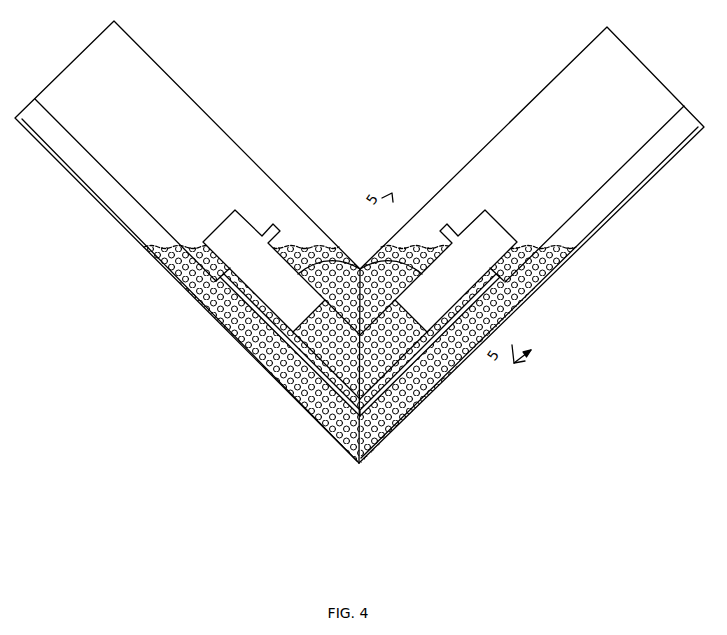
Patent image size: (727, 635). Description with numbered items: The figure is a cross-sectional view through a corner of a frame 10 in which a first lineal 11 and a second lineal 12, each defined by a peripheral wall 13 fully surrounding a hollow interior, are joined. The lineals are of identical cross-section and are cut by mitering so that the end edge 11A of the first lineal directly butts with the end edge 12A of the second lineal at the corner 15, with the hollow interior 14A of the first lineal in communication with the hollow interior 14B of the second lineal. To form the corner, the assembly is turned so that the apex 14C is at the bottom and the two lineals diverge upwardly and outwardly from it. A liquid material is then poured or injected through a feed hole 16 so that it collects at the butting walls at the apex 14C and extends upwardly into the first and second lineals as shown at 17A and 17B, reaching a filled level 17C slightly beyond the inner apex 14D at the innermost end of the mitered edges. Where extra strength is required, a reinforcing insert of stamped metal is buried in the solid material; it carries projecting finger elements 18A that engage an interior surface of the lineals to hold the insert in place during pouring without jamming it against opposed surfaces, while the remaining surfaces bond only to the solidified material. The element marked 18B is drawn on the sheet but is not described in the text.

The frame 10 is at (338, 202).
The first lineal 11 is at (217, 123).
The second lineal 12 is at (493, 112).
The mitered end edge of first lineal 11A is at (380, 437).
The mitered end edge of second lineal 12A is at (330, 440).
The peripheral wall 13 is at (455, 330).
The hollow interior of first lineal 14A is at (227, 177).
The hollow interior of second lineal 14B is at (483, 182).
The apex 14C is at (365, 448).
The apex at innermost end of edges 14D is at (349, 340).
The corner 15 is at (252, 393).
The feed hole 16 is at (352, 243).
The liquid material extending into first lineal 17A is at (305, 258).
The liquid material extending into second lineal 17B is at (517, 280).
The filled level 17C is at (413, 250).
The projecting elements 18A is at (440, 343).
The second skin strip 18B is at (540, 290).